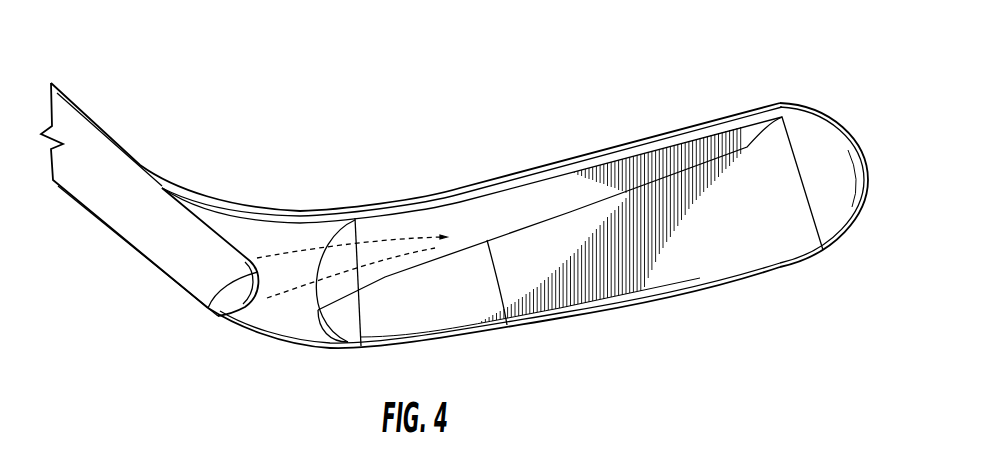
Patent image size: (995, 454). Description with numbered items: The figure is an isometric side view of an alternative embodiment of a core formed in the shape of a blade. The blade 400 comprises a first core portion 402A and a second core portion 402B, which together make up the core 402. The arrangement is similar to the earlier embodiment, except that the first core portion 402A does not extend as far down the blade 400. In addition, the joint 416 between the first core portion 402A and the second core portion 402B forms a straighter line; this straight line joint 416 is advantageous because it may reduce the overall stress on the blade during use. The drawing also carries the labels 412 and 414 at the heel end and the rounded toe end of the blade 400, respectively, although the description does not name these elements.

The blade 400 is at (523, 158).
The core 402 is at (527, 225).
The first core portion 402A is at (317, 233).
The second core portion 402B is at (660, 250).
The heel region 412 is at (208, 308).
The toe region 414 is at (850, 127).
The joint 416 is at (507, 325).